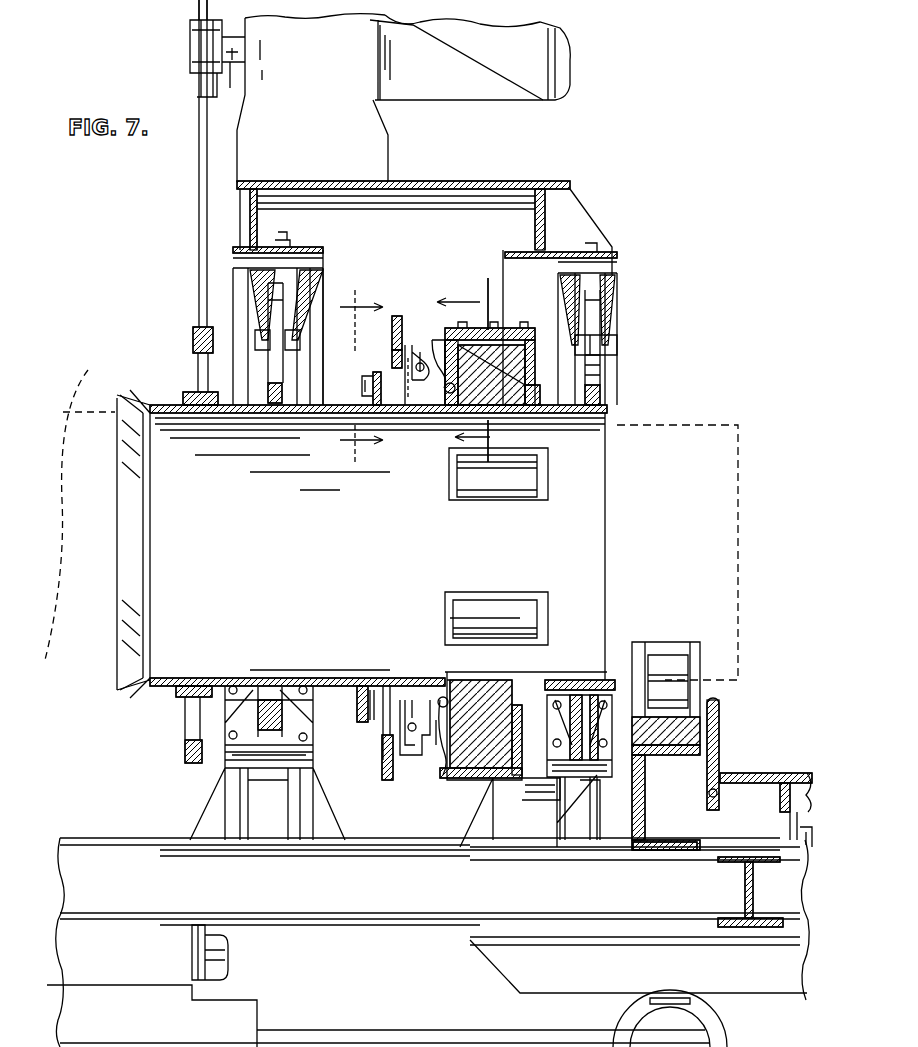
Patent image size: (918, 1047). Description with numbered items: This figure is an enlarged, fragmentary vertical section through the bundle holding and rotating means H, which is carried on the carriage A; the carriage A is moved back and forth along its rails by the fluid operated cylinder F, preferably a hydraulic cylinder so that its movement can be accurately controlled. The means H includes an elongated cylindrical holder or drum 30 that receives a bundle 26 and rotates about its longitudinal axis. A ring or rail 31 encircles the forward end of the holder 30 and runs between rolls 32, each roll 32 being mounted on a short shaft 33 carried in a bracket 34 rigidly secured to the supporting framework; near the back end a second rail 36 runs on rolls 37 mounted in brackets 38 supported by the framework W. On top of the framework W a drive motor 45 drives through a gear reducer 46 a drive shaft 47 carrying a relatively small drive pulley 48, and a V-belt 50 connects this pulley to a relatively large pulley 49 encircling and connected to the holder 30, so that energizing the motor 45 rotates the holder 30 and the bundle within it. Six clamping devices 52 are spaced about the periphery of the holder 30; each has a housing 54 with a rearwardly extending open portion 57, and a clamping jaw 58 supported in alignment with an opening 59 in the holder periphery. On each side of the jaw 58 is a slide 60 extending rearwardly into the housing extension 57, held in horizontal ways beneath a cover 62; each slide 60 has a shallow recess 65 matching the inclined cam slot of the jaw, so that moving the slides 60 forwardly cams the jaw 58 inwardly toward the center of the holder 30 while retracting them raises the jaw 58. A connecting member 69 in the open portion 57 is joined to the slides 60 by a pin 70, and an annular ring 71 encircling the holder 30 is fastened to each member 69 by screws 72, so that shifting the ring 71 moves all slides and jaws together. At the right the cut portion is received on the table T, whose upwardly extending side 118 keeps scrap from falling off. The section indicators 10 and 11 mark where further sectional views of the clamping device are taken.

The section line 10 is at (460, 370).
The section line 11 is at (358, 374).
The bundle 26 is at (391, 525).
The holder 30 is at (180, 680).
The rail 31 is at (603, 402).
The roll 32 is at (601, 374).
The short shaft 33 is at (612, 342).
The bracket 34 is at (608, 310).
The second rail 36 is at (283, 393).
The roll 37 is at (284, 372).
The bracket 38 is at (258, 305).
The drive motor 45 is at (572, 78).
The gear reducer 46 is at (390, 98).
The drive shaft 47 is at (234, 62).
The drive pulley 48 is at (208, 75).
The large pulley 49 is at (188, 752).
The V-belt 50 is at (205, 256).
The clamping device 52 is at (518, 319).
The housing 54 is at (528, 390).
The open portion 57 is at (378, 372).
The clamping jaw 58 is at (518, 356).
The opening 59 is at (545, 611).
The slide 60 is at (438, 340).
The cover 62 is at (505, 775).
The shallow recess 65 is at (439, 394).
The connecting member 69 is at (390, 415).
The pin 70 is at (420, 362).
The annular ring 71 is at (396, 316).
The screw 72 is at (393, 352).
The upwardly extending side 118 is at (720, 728).
The carriage A is at (398, 930).
The fluid operated cylinder F is at (236, 959).
The means for holding and rotating a bundle H is at (393, 803).
The receiving table T is at (757, 770).
The supporting framework W is at (486, 184).